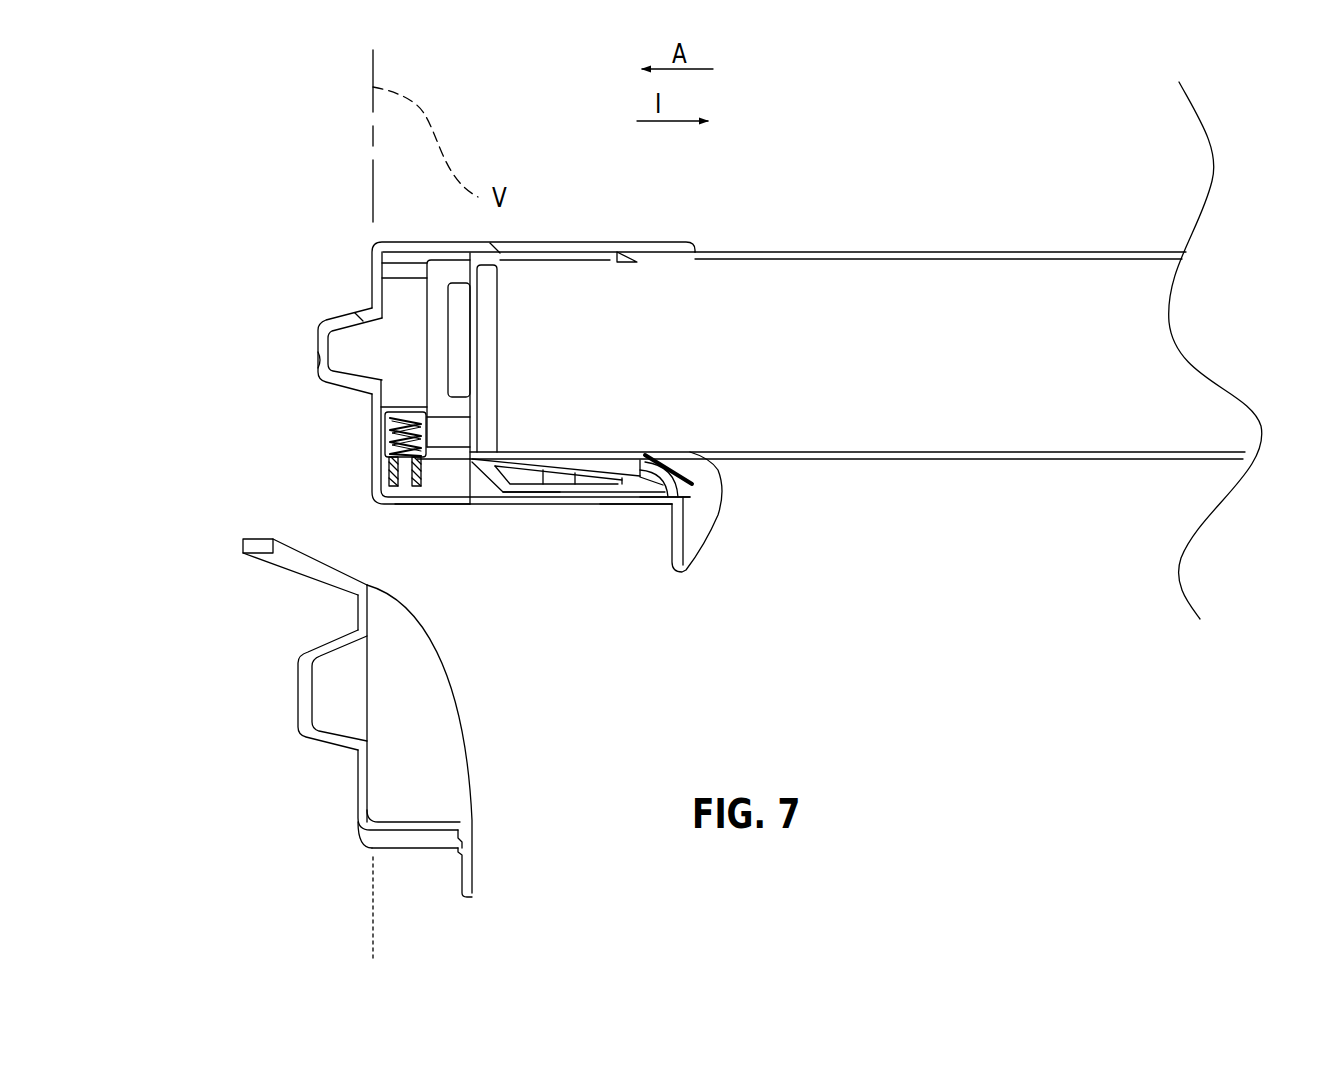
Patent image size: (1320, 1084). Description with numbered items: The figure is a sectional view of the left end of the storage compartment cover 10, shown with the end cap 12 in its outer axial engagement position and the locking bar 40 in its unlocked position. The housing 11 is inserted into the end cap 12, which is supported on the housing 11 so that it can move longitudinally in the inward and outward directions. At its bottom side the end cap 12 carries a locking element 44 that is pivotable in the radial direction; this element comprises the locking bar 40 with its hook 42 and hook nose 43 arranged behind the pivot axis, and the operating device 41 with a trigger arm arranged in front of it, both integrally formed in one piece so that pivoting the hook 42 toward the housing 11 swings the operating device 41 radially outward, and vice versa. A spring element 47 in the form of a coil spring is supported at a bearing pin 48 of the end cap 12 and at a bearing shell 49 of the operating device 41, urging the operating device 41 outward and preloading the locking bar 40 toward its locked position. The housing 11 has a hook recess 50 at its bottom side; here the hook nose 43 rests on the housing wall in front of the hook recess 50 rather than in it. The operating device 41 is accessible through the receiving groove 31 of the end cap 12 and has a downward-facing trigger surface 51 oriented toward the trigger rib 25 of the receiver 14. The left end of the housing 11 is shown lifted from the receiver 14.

The storage compartment cover 10 is at (993, 148).
The housing 11 is at (868, 242).
The first end cap 12 is at (533, 226).
The first receiver 14 is at (352, 786).
The trigger rib 25 is at (414, 816).
The receiving groove 31 is at (438, 510).
The locking bar 40 is at (617, 510).
The operating device 41 is at (488, 498).
The hook 42 is at (663, 460).
The hook nose 43 is at (641, 449).
The locking element 44 is at (625, 535).
The spring element 47 is at (376, 434).
The bearing pin 48 is at (406, 392).
The bearing shell 49 is at (398, 491).
The hook recess 50 is at (703, 446).
The trigger surface 51 is at (416, 494).